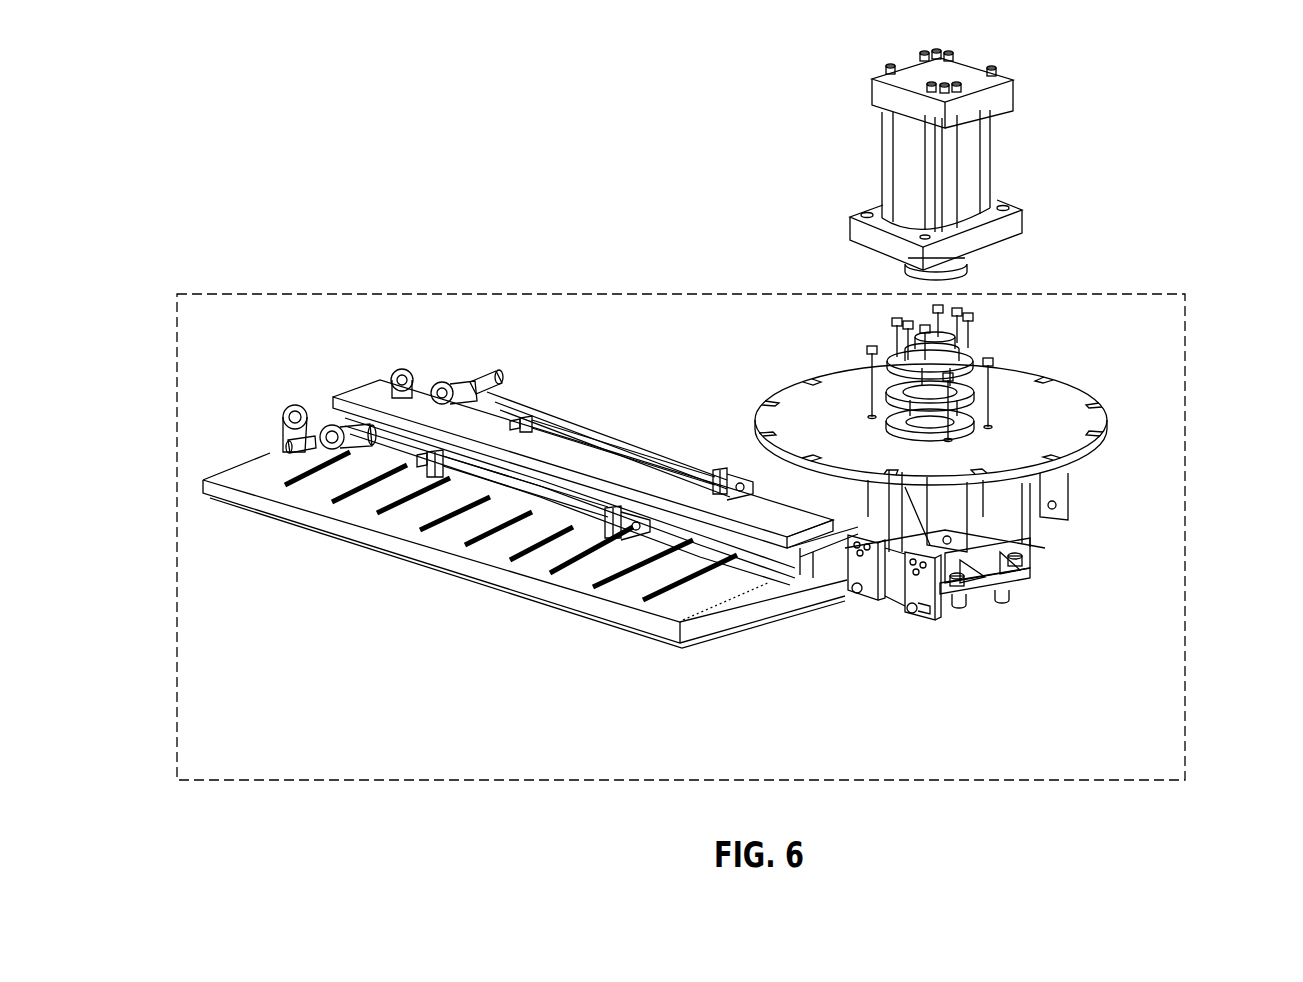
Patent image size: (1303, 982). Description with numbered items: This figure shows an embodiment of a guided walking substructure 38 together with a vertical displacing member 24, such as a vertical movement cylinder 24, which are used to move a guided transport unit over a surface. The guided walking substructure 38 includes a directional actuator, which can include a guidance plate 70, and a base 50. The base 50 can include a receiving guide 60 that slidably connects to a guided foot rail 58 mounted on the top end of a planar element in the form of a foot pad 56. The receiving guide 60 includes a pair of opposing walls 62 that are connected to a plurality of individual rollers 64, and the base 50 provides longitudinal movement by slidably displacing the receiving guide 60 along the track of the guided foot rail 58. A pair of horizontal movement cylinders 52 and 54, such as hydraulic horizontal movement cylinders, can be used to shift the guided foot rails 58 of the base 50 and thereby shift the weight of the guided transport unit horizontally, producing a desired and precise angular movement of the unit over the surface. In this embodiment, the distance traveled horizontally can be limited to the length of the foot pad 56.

The vertical displacing member 24 is at (912, 162).
The guided walking substructure 38 is at (1197, 567).
The base 50 is at (642, 400).
The horizontal movement cylinder 52 is at (512, 498).
The horizontal movement cylinder 54 is at (663, 463).
The foot pad 56 is at (363, 503).
The guided foot rail 58 is at (382, 393).
The receiving guide 60 is at (1003, 601).
The opposing walls 62 is at (860, 568).
The rollers 64 is at (947, 614).
The guidance plate 70 is at (1037, 413).